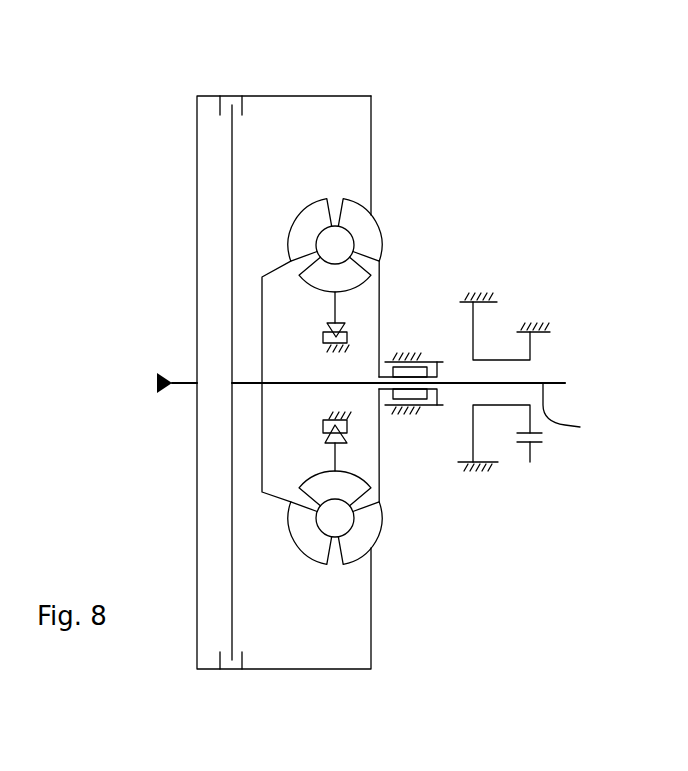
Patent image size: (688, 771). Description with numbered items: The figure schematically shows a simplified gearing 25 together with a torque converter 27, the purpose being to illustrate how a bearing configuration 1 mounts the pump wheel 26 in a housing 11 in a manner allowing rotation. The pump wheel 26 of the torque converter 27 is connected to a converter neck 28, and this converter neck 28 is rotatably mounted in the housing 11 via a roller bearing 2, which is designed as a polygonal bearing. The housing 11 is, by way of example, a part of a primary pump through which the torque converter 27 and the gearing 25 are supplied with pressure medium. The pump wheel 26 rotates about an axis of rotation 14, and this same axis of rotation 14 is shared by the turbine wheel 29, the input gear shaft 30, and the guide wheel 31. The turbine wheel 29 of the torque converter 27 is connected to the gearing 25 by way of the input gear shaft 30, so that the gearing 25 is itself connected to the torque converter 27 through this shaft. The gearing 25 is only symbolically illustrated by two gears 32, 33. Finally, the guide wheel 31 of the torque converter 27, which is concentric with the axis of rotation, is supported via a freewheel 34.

The bearing configuration 1 is at (437, 414).
The roller bearing 2 is at (394, 402).
The housing 11 is at (410, 352).
The axis of rotation 14 is at (560, 383).
The gearing 25 is at (406, 127).
The pump wheel 26 is at (376, 222).
The torque converter 27 is at (308, 118).
The converter neck 28 is at (418, 372).
The turbine wheel 29 is at (312, 205).
The input gear shaft 30 is at (575, 410).
The guide wheel 31 is at (318, 282).
The gear 32 is at (533, 328).
The gear 33 is at (537, 447).
The freewheel 34 is at (328, 412).